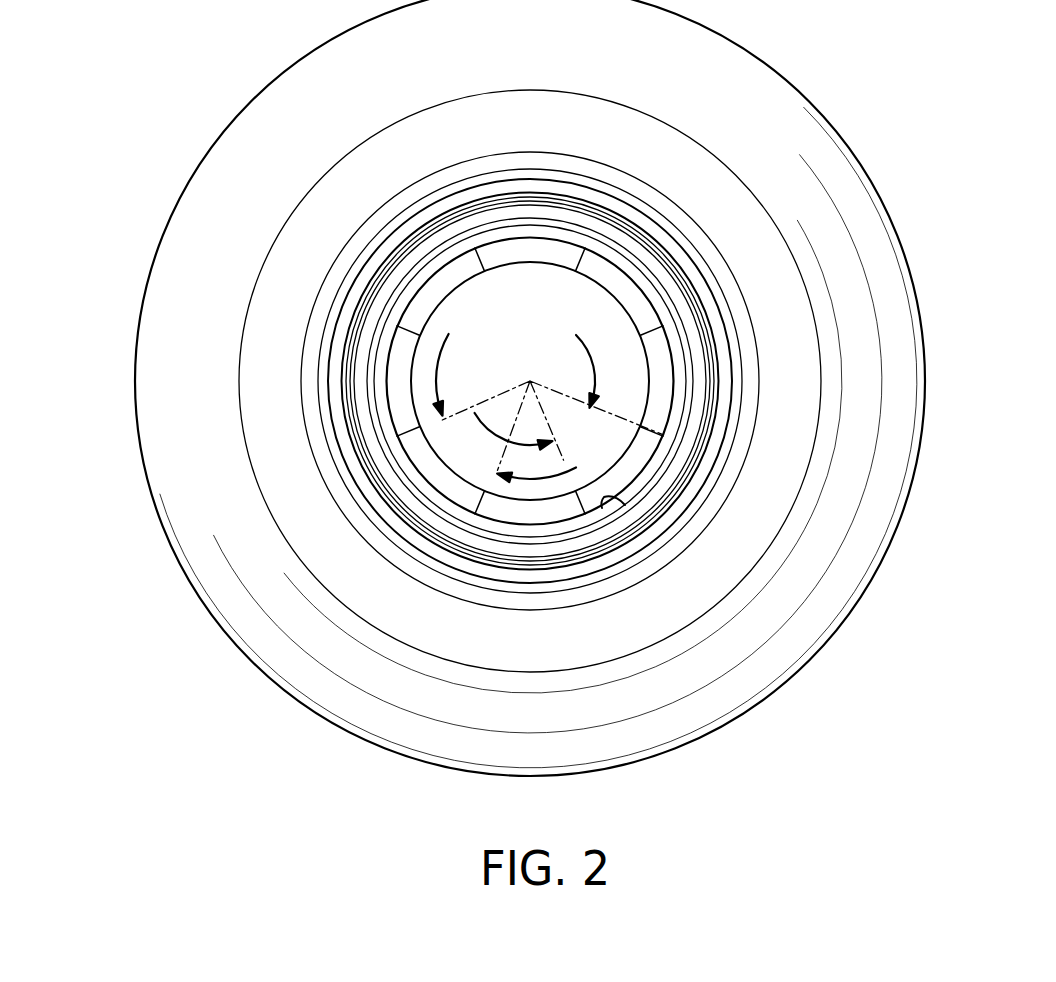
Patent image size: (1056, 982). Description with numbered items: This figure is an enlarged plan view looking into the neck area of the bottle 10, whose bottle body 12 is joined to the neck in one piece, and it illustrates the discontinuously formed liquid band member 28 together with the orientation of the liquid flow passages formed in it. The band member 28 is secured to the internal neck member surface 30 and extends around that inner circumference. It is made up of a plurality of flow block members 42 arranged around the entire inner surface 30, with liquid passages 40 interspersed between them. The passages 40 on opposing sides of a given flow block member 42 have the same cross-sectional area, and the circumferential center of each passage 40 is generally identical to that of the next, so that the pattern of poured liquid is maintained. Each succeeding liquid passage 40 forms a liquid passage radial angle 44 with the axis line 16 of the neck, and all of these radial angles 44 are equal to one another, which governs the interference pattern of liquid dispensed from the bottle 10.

The bottle 10 is at (905, 148).
The bottle body 12 is at (907, 257).
The axis line 16 is at (530, 381).
The discontinuously formed liquid band member 28 is at (676, 408).
The internal neck member surface 30 is at (625, 505).
The liquid passages 40 is at (422, 480).
The flow block members 42 is at (670, 337).
The liquid passage radial angle 44 is at (496, 468).